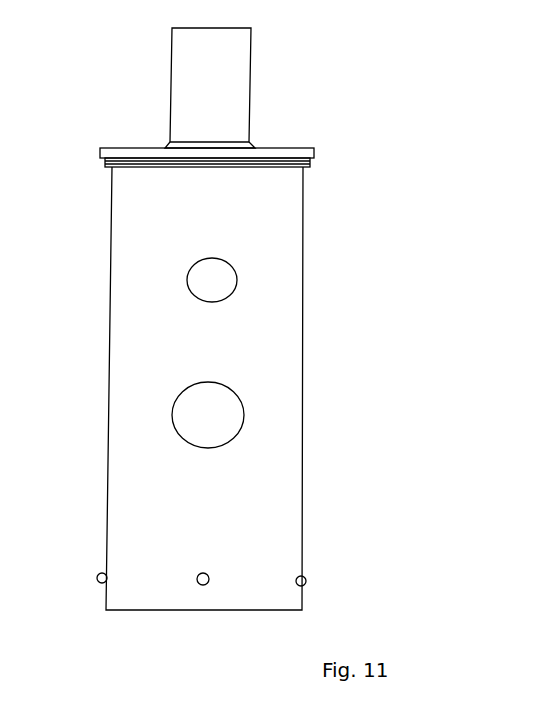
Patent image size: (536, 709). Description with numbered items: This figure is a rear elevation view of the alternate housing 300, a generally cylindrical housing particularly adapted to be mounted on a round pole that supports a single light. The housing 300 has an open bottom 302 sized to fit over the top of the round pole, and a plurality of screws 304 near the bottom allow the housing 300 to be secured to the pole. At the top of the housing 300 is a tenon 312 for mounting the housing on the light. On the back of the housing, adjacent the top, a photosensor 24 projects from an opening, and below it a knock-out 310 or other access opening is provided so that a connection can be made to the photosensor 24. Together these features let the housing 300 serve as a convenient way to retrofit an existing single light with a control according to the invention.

The alternate housing 300 is at (0, 155).
The open bottom 302 is at (185, 607).
The tenon 312 is at (237, 87).
The photosensor 24 is at (238, 280).
The knock-out 310 is at (244, 415).
The screws 304 is at (200, 580).